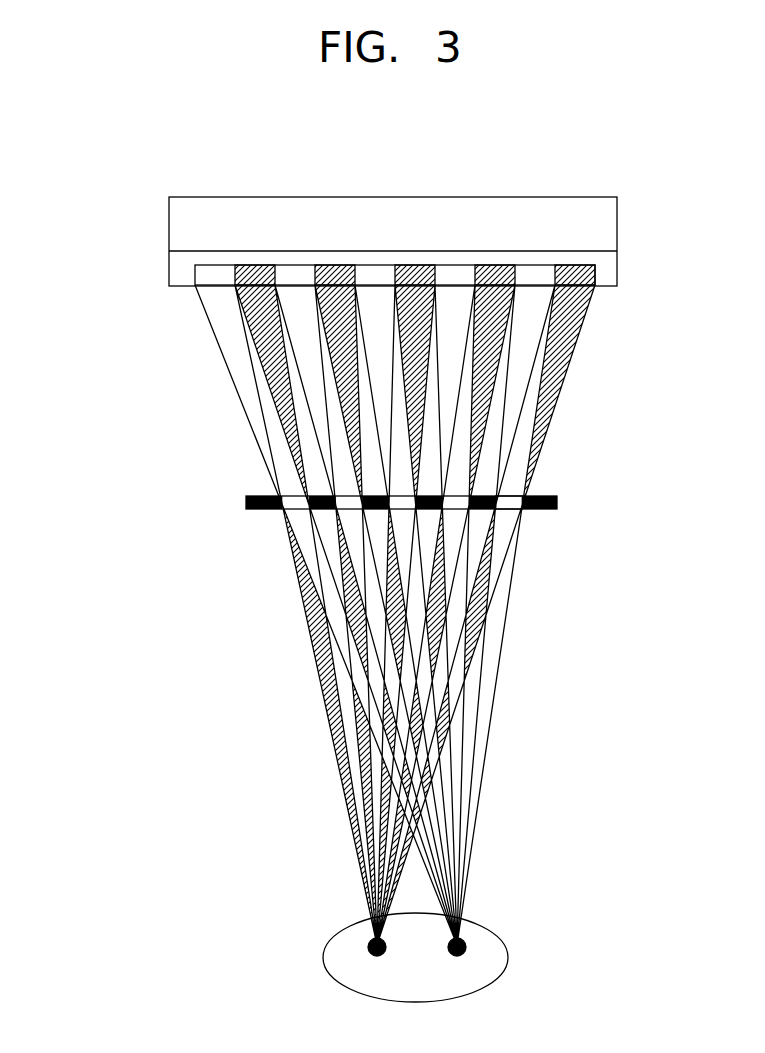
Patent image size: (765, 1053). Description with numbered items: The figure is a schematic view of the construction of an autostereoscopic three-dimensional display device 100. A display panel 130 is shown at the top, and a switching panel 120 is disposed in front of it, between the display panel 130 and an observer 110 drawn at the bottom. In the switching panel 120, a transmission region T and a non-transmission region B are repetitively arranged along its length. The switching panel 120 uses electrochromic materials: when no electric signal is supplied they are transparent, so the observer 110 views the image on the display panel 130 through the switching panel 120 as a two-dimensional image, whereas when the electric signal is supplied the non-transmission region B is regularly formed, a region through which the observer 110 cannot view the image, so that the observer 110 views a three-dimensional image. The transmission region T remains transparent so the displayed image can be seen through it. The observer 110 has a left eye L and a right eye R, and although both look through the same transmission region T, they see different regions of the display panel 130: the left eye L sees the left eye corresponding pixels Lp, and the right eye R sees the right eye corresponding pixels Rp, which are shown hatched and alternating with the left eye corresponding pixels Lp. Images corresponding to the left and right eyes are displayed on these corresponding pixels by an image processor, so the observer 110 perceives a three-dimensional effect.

The autostereoscopic 3D display device 100 is at (364, 373).
The display panel 130 is at (605, 221).
The right eye corresponding pixels Rp is at (512, 263).
The left eye corresponding pixels Lp is at (462, 280).
The switching panel 120 is at (436, 542).
The transmission region T is at (513, 503).
The non-transmission region B is at (485, 509).
The observer 110 is at (450, 957).
The right eye R is at (377, 962).
The left eye L is at (457, 962).